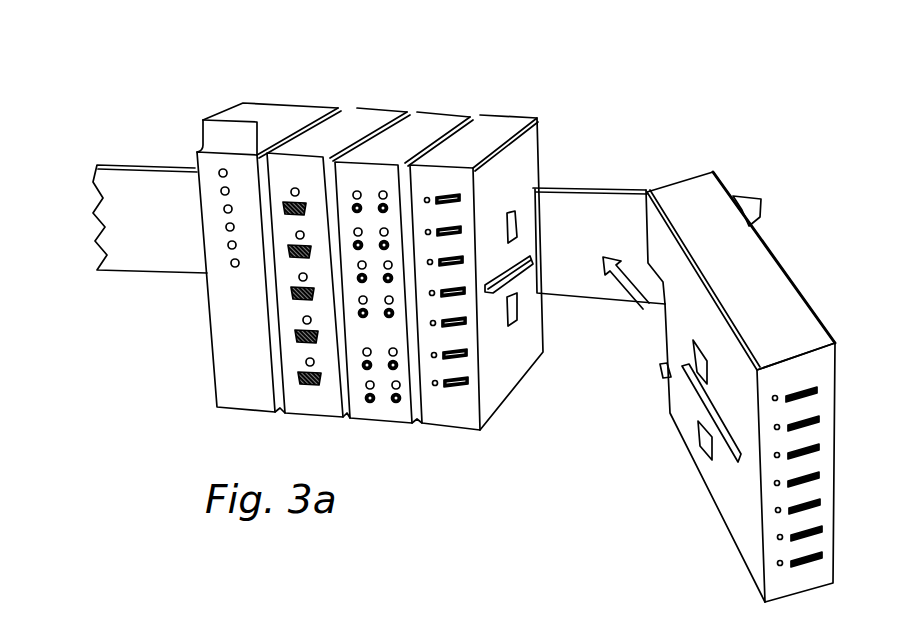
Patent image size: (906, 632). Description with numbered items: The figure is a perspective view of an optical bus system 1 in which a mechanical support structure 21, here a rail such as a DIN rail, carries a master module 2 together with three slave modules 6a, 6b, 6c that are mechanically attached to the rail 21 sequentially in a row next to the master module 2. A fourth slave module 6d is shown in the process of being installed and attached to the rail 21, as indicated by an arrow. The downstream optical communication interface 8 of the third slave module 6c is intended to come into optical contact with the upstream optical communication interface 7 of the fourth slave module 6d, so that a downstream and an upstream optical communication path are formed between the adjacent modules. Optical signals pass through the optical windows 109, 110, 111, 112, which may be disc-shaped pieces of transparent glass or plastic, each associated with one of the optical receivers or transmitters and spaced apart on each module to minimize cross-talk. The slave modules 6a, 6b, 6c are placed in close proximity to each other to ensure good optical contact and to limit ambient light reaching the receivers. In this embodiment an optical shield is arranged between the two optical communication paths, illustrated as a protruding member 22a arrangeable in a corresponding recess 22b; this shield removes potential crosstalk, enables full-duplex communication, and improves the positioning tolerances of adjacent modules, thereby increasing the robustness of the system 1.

The optical bus system 1 is at (139, 89).
The master module 2 is at (274, 122).
The mechanical support structure 21 is at (145, 257).
The slave module 6a is at (368, 125).
The slave module 6b is at (437, 125).
The slave module 6c is at (505, 127).
The slave module 6d is at (776, 303).
The upstream optical communication interface 7 is at (594, 497).
The downstream optical communication interface 8 is at (606, 153).
The protruding member 22a is at (540, 295).
The recess 22b is at (700, 414).
The optical window 109 is at (697, 376).
The optical window 110 is at (698, 460).
The optical window 111 is at (514, 326).
The optical window 112 is at (514, 232).